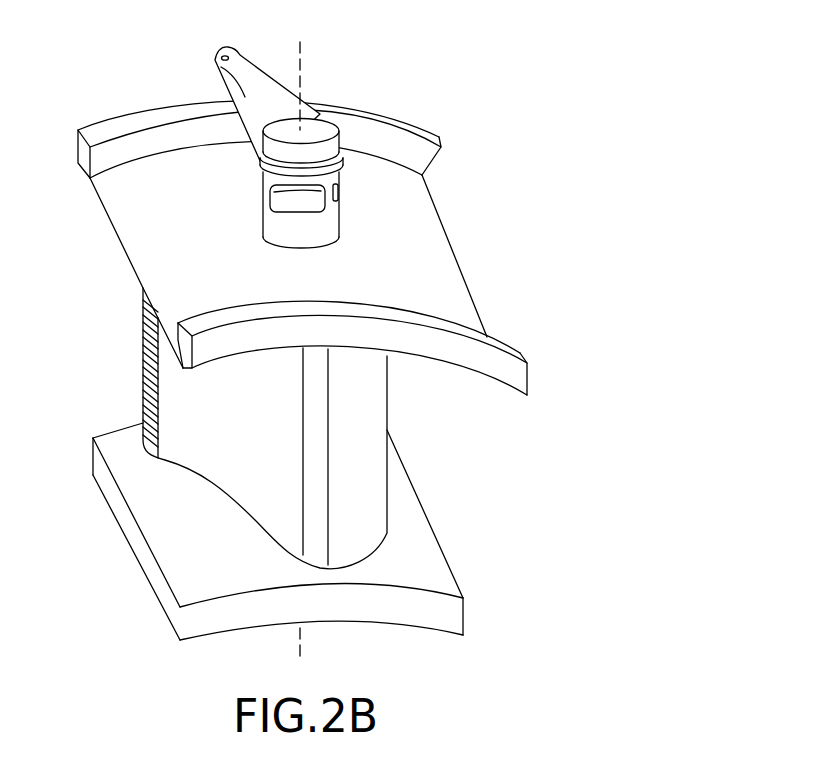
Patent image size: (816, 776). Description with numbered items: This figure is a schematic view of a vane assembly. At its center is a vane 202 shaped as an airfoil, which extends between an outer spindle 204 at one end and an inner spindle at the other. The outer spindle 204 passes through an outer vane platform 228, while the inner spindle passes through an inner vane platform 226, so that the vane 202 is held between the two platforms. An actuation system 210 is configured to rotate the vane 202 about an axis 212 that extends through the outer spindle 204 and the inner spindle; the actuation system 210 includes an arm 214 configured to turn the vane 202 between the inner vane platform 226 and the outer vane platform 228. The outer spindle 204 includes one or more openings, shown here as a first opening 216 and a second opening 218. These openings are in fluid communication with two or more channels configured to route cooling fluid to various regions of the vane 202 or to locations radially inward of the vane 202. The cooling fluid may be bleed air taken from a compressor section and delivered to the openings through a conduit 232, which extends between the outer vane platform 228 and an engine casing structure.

The vane 202 is at (370, 412).
The outer spindle 204 is at (328, 230).
The actuation system 210 is at (187, 85).
The axis 212 is at (300, 68).
The arm 214 is at (213, 65).
The first opening 216 is at (283, 198).
The second opening 218 is at (338, 186).
The inner vane platform 226 is at (455, 617).
The outer vane platform 228 is at (523, 378).
The conduit 232 is at (242, 293).